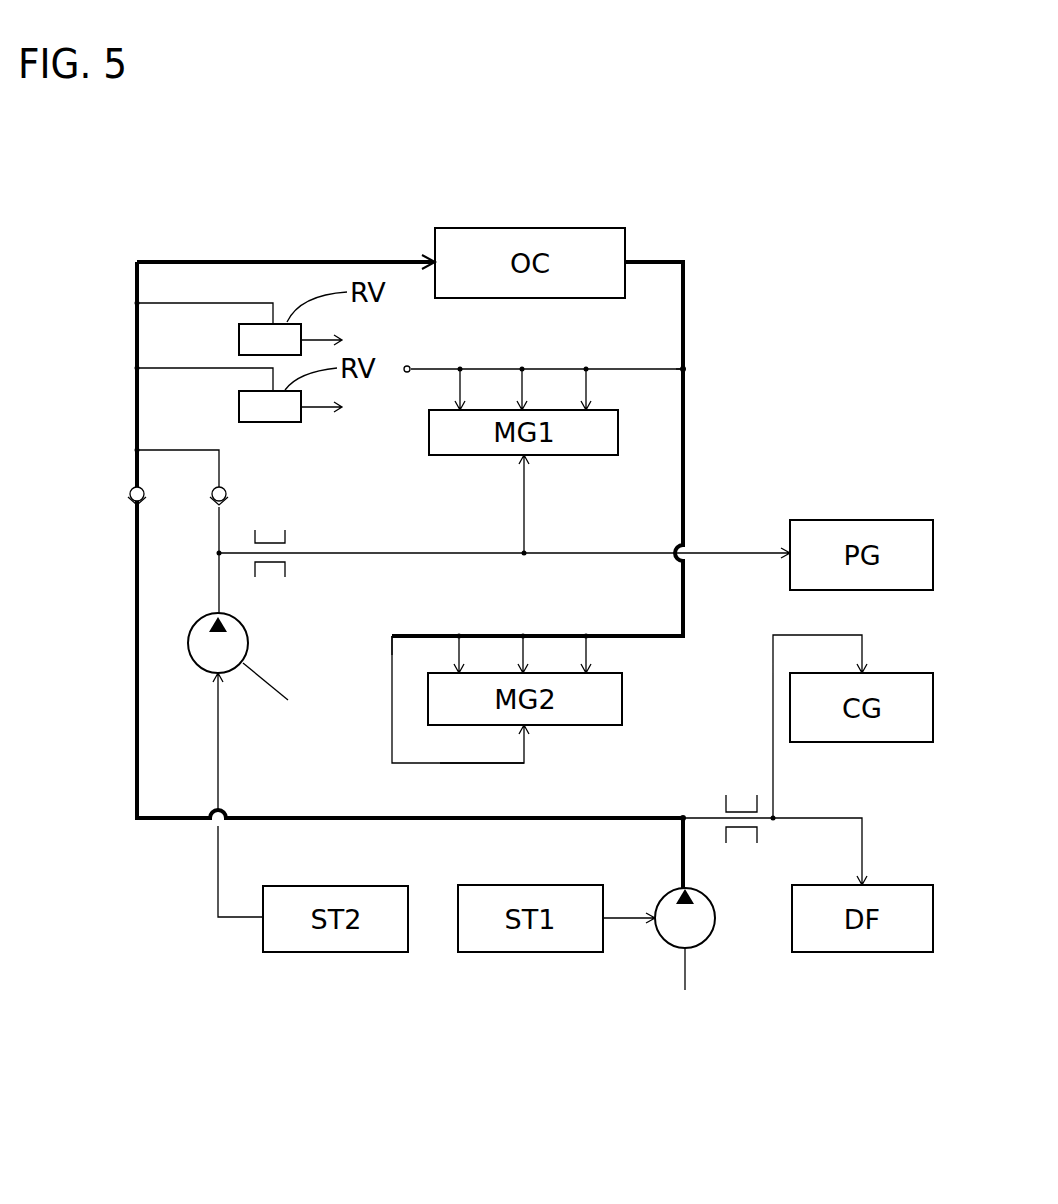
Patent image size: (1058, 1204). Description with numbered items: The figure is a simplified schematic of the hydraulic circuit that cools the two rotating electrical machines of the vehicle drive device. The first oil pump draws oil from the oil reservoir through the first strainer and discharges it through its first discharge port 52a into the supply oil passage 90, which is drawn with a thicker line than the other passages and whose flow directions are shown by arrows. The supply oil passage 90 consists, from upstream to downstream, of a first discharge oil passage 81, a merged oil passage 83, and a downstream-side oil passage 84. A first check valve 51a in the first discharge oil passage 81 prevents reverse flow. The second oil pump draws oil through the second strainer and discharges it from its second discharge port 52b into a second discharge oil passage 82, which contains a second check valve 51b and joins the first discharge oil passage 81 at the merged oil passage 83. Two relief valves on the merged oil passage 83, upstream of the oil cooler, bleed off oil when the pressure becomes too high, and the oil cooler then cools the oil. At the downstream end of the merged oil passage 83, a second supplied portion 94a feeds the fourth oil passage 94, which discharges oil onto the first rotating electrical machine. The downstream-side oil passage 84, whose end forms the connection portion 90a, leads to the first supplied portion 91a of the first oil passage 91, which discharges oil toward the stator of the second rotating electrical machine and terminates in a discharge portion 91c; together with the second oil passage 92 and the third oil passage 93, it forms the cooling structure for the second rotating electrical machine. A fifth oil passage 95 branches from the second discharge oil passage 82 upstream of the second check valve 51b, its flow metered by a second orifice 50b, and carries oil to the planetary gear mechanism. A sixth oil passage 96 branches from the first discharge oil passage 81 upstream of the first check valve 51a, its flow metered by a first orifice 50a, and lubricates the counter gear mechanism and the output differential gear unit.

The first orifice 50a is at (722, 803).
The second orifice 50b is at (287, 537).
The first check valve 51a is at (127, 497).
The second check valve 51b is at (208, 500).
The first discharge port 52a is at (683, 887).
The second discharge port 52b is at (220, 612).
The first discharge oil passage 81 is at (137, 703).
The second discharge oil passage 82 is at (222, 525).
The merged oil passage 83 is at (305, 262).
The downstream-side oil passage 84 is at (685, 473).
The supply oil passage 90 is at (697, 297).
The connection portion 90a is at (685, 595).
The first oil passage 91 is at (547, 636).
The first supplied portion 91a is at (687, 638).
The discharge portion 91c is at (392, 635).
The second oil passage 92 is at (470, 763).
The third oil passage 93 is at (390, 700).
The fourth oil passage 94 is at (492, 368).
The second supplied portion 94a is at (685, 369).
The fifth oil passage 95 is at (398, 553).
The sixth oil passage 96 is at (707, 822).